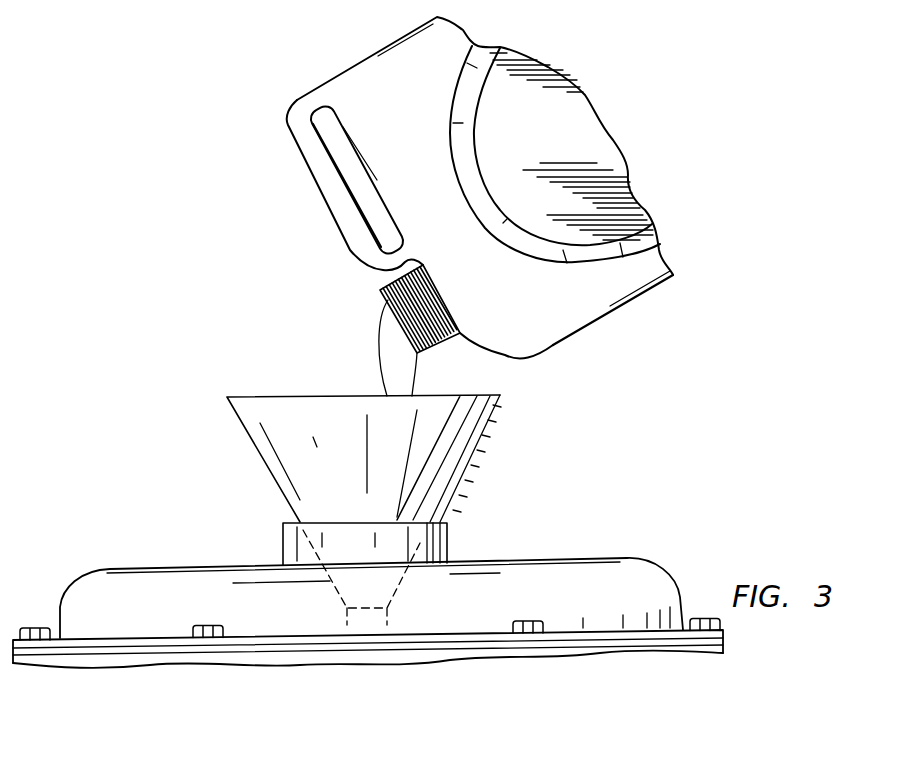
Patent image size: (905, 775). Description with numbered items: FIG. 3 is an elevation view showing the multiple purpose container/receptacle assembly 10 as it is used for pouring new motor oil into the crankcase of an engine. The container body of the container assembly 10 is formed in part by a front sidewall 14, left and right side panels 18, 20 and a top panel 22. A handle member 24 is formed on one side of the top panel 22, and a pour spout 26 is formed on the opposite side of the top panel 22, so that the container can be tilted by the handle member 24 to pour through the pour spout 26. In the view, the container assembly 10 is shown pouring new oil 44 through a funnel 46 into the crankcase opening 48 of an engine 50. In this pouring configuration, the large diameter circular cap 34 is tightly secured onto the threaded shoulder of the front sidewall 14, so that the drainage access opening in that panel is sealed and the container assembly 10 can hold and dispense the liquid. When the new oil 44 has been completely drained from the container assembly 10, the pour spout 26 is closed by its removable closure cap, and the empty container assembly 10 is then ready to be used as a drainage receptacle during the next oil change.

The multiple purpose container/receptacle assembly 10 is at (258, 113).
The front sidewall 14 is at (522, 311).
The left side panel 18 is at (635, 303).
The right side panel 20 is at (366, 59).
The top panel 22 is at (370, 175).
The handle member 24 is at (303, 158).
The pour spout 26 is at (382, 289).
The circular cap 34 is at (650, 187).
The new oil 44 is at (387, 356).
The funnel 46 is at (477, 433).
The crankcase opening 48 is at (443, 518).
The engine 50 is at (188, 568).